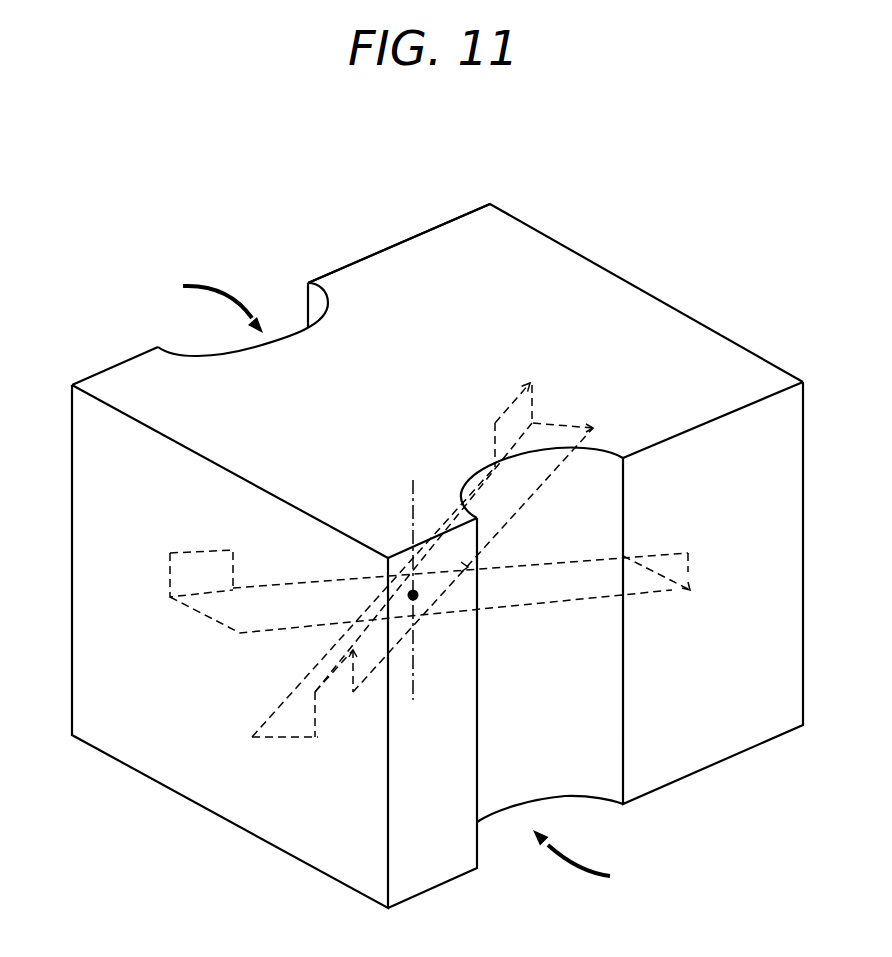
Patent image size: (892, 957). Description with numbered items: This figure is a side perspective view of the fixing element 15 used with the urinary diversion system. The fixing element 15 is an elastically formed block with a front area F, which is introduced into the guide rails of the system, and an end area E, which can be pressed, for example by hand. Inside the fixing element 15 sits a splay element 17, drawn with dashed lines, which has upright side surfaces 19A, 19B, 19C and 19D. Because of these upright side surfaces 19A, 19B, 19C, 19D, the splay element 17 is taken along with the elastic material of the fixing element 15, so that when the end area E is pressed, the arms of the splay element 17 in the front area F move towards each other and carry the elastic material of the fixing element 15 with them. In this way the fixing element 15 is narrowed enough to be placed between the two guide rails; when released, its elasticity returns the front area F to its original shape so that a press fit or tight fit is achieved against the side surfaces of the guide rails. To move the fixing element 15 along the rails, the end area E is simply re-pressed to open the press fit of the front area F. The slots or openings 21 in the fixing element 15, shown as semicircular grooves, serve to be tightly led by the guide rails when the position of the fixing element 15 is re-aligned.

The fixing element 15 is at (573, 248).
The splay element 17 is at (735, 543).
The upright side surface 19A is at (170, 573).
The upright side surface 19B is at (313, 718).
The upright side surface 19C is at (727, 616).
The upright side surface 19D is at (535, 408).
The slots or openings 21 is at (395, 584).
The end area E is at (433, 228).
The front area F is at (113, 363).